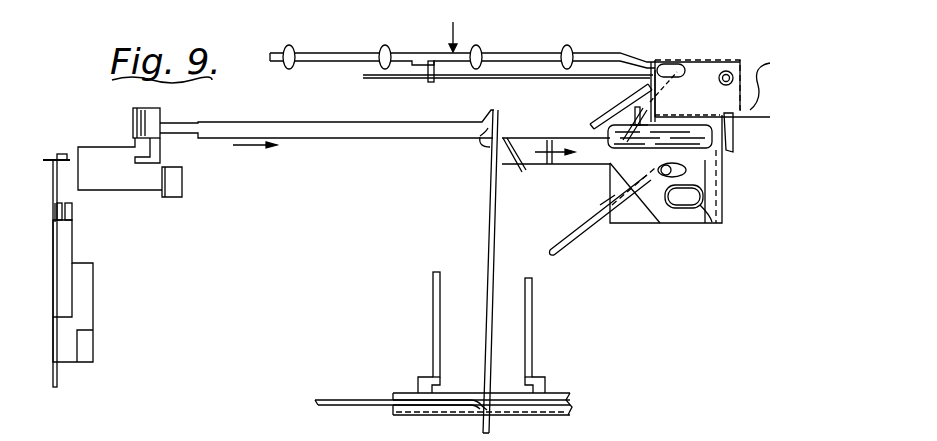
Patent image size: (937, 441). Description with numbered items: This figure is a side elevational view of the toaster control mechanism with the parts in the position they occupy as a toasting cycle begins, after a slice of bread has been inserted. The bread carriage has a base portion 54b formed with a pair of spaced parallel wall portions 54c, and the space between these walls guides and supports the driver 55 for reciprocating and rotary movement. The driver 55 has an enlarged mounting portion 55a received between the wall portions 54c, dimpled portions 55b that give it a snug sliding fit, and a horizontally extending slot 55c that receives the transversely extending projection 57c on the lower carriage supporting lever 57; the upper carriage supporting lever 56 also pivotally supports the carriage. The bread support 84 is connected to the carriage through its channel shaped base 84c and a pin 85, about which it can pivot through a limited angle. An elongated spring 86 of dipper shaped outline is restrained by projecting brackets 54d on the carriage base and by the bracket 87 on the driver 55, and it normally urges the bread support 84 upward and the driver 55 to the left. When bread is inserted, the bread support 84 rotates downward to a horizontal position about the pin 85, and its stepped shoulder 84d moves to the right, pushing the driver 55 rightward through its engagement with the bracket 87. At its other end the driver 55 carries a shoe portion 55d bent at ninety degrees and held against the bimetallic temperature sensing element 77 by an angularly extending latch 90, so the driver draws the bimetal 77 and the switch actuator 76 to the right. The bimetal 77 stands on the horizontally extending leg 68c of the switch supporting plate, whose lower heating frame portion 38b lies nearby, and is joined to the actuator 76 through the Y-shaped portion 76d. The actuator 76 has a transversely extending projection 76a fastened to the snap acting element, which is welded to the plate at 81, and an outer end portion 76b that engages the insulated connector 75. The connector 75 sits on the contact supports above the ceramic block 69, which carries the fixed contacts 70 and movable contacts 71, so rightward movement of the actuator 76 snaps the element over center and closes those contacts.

The lower horizontally extending portion 38b is at (557, 398).
The base portion 54b is at (777, 50).
The wall portion 54c is at (640, 213).
The projecting bracket 54d is at (628, 128).
The driver 55 is at (548, 164).
The enlarged mounting portion 55a is at (707, 187).
The dimpled portion 55b is at (730, 155).
The horizontally extending slot 55c is at (690, 176).
The shoe portion 55d is at (510, 185).
The carriage supporting lever 56 is at (622, 102).
The carriage supporting lever 57 is at (563, 243).
The transversely extending projection 57c is at (577, 211).
The horizontally extending leg 68c is at (347, 402).
The contact supporting ceramic block 69 is at (87, 280).
The fixed contact 70 is at (72, 212).
The movable contact 71 is at (55, 207).
The insulated connector 75 is at (47, 157).
The switch actuator 76 is at (343, 133).
The transversely extending projection 76a is at (152, 112).
The outer end portion 76b is at (96, 147).
The Y-shaped portion 76d is at (490, 138).
The bimetallic temperature sensing element 77 is at (492, 233).
The weld 81 is at (173, 187).
The bread support 84 is at (327, 53).
The base 84c is at (693, 72).
The stepped shoulder 84d is at (430, 80).
The pin 85 is at (728, 71).
The elongated spring 86 is at (497, 78).
The bracket 87 is at (774, 86).
The latch 90 is at (520, 137).